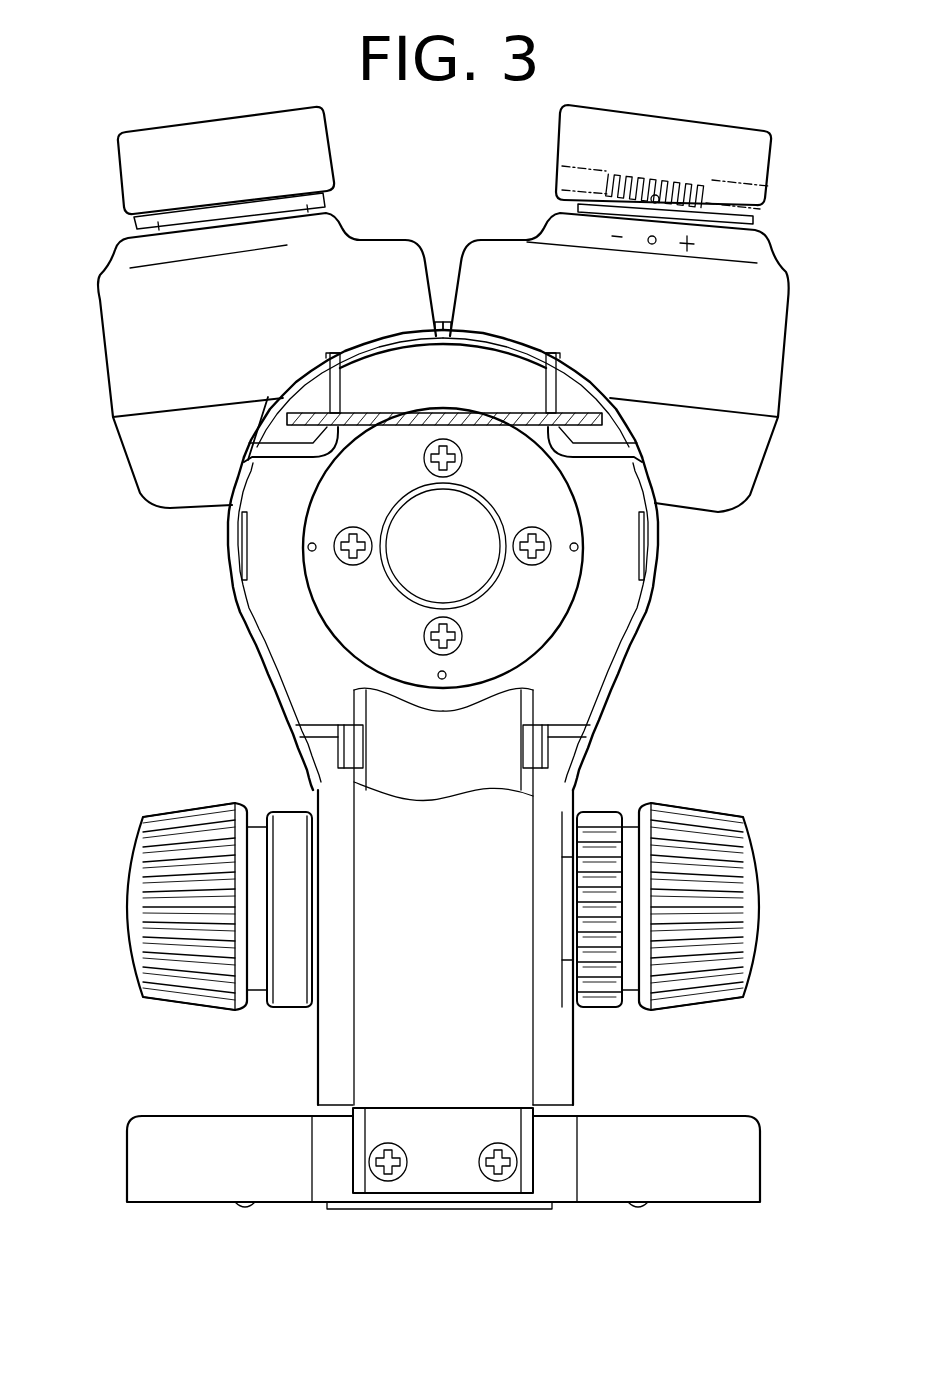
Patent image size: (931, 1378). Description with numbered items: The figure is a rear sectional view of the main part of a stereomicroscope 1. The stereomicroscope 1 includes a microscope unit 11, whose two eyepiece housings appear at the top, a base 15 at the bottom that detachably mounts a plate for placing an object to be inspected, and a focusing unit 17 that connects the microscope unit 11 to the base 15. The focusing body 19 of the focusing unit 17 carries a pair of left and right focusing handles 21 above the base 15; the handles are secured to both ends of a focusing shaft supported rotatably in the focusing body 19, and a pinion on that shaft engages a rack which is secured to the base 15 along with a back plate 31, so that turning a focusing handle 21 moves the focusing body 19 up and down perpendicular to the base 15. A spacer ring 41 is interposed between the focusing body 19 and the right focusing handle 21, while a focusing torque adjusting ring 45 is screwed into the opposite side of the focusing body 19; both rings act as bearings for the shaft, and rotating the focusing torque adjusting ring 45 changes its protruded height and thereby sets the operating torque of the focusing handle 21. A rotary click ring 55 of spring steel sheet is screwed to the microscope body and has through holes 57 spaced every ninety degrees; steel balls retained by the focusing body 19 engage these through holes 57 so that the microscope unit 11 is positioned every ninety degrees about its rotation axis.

The stereomicroscope 1 is at (88, 240).
The microscope unit 11 is at (96, 414).
The base 15 is at (752, 1114).
The focusing unit 17 is at (610, 720).
The focusing body 19 is at (575, 772).
The focusing handle 21 is at (157, 908).
The back plate 31 is at (452, 1148).
The spacer ring 41 is at (287, 1002).
The focusing torque adjusting ring 45 is at (598, 1008).
The rotary click ring 55 is at (552, 612).
The through hole 57 is at (308, 547).